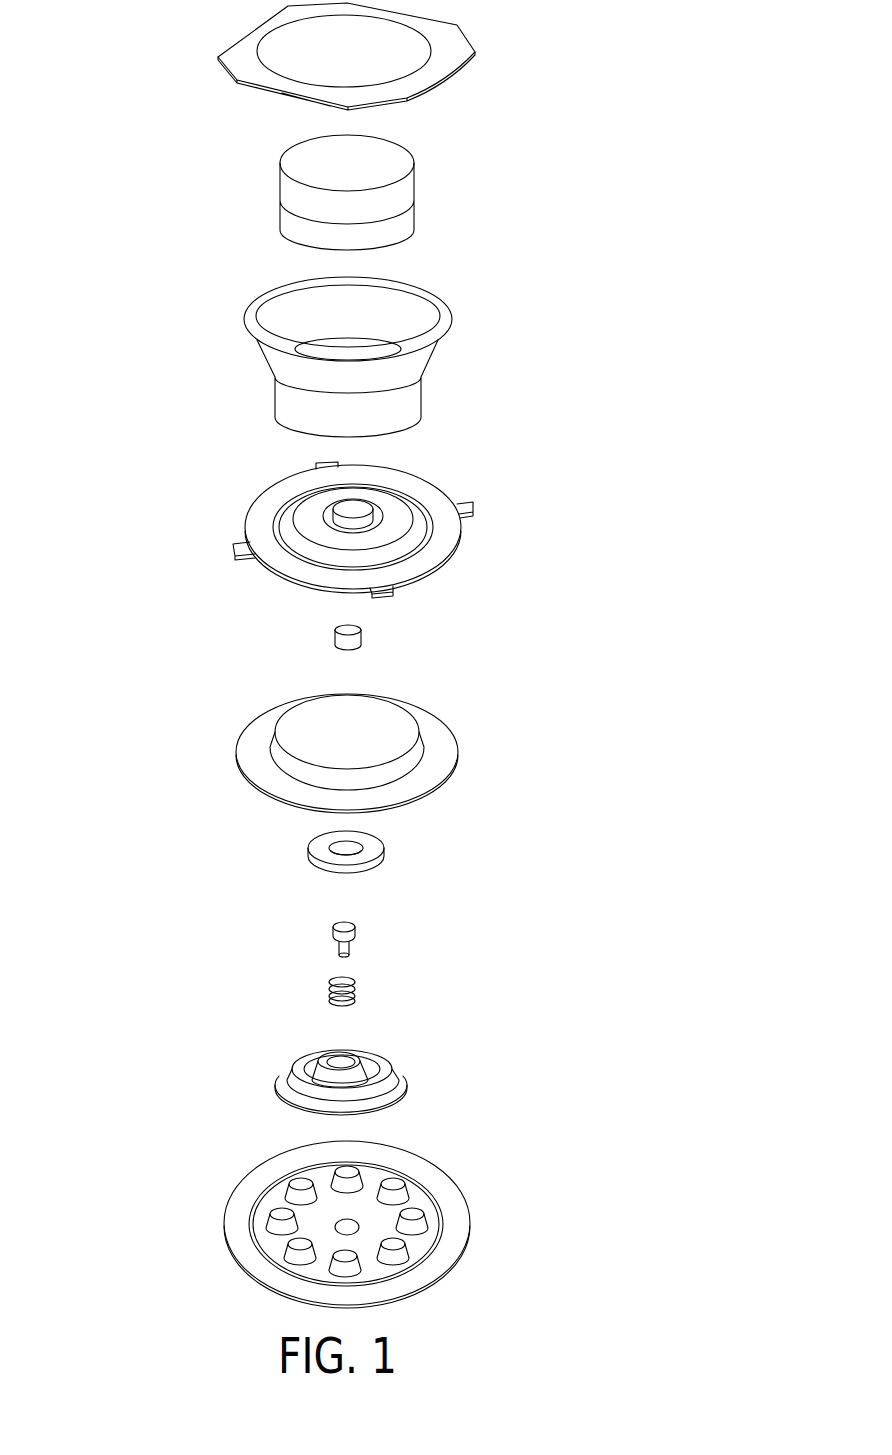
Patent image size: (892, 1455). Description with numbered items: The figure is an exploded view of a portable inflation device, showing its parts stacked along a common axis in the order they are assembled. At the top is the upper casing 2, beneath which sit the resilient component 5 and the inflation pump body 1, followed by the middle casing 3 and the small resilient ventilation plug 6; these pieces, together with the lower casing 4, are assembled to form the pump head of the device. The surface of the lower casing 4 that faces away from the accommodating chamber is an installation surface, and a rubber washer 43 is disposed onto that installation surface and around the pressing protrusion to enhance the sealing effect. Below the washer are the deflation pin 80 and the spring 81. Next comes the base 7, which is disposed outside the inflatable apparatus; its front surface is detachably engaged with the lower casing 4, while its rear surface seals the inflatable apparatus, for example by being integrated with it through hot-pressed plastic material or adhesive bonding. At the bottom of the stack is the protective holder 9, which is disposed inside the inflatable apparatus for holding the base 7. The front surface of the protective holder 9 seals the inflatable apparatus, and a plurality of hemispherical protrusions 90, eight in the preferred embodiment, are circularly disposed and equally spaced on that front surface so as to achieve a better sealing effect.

The inflation pump body 1 is at (290, 402).
The upper casing 2 is at (243, 53).
The middle casing 3 is at (282, 560).
The lower casing 4 is at (263, 762).
The resilient component 5 is at (288, 193).
The resilient ventilation plug 6 is at (363, 642).
The base 7 is at (283, 1083).
The protective holder 9 is at (345, 1224).
The rubber washer 43 is at (375, 850).
The deflation pin 80 is at (357, 938).
The spring 81 is at (353, 988).
The hemispherical protrusions 90 is at (413, 1213).